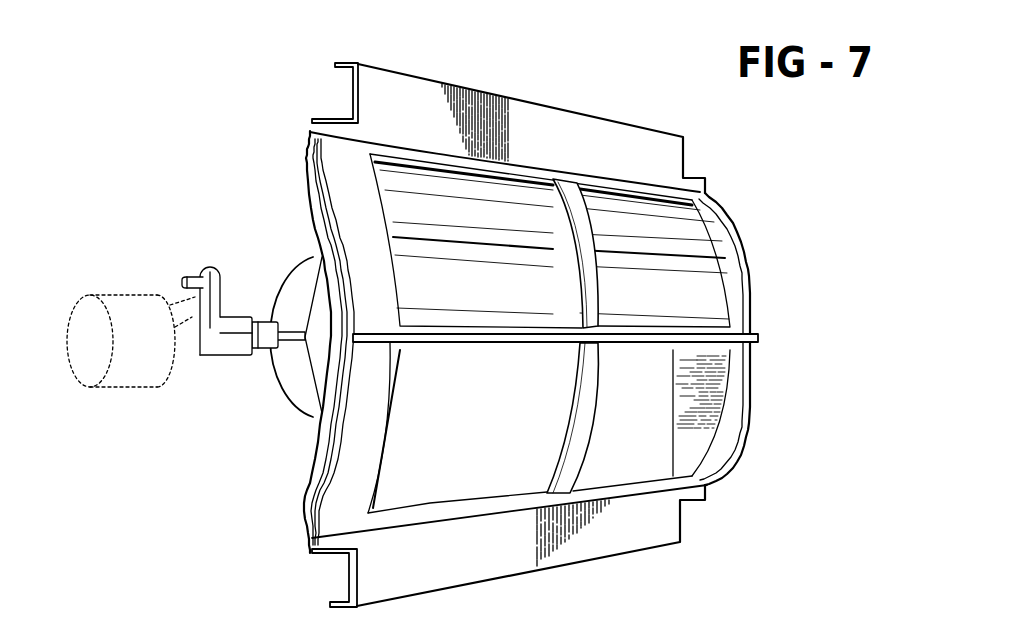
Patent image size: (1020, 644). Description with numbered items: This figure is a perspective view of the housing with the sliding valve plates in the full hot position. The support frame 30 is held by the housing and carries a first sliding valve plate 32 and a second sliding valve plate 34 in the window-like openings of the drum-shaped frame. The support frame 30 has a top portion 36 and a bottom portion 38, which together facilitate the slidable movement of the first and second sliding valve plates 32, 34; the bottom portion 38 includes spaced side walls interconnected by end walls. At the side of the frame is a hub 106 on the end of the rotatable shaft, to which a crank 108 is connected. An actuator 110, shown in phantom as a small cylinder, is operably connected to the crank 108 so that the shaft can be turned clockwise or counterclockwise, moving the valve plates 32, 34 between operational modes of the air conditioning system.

The support frame 30 is at (564, 140).
The first sliding valve plate 32 is at (708, 298).
The second sliding valve plate 34 is at (700, 232).
The top portion 36 is at (345, 155).
The bottom portion 38 is at (290, 383).
The hub 106 is at (252, 293).
The crank 108 is at (228, 297).
The actuator 110 is at (135, 290).